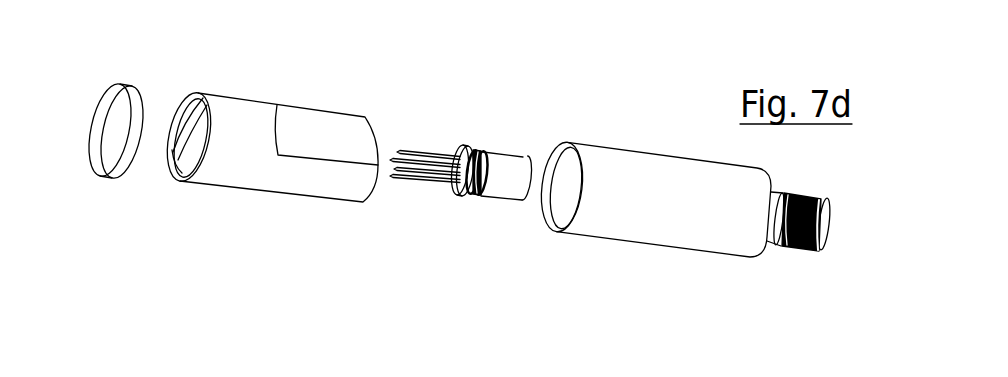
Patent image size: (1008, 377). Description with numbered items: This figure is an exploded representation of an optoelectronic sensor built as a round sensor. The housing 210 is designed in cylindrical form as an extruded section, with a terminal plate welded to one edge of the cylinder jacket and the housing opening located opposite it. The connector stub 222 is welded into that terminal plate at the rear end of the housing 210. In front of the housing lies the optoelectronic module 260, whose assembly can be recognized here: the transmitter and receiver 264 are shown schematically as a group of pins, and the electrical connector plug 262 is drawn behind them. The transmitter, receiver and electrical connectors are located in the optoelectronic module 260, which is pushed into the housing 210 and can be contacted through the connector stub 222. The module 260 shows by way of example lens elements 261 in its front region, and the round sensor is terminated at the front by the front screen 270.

The front screen 270 is at (116, 82).
The lens elements 261 is at (183, 97).
The optoelectronic module 260 is at (260, 173).
The transmitter and receiver 264 is at (413, 133).
The electrical connector plug 262 is at (483, 198).
The housing 210 is at (580, 260).
The connector stub 222 is at (795, 248).